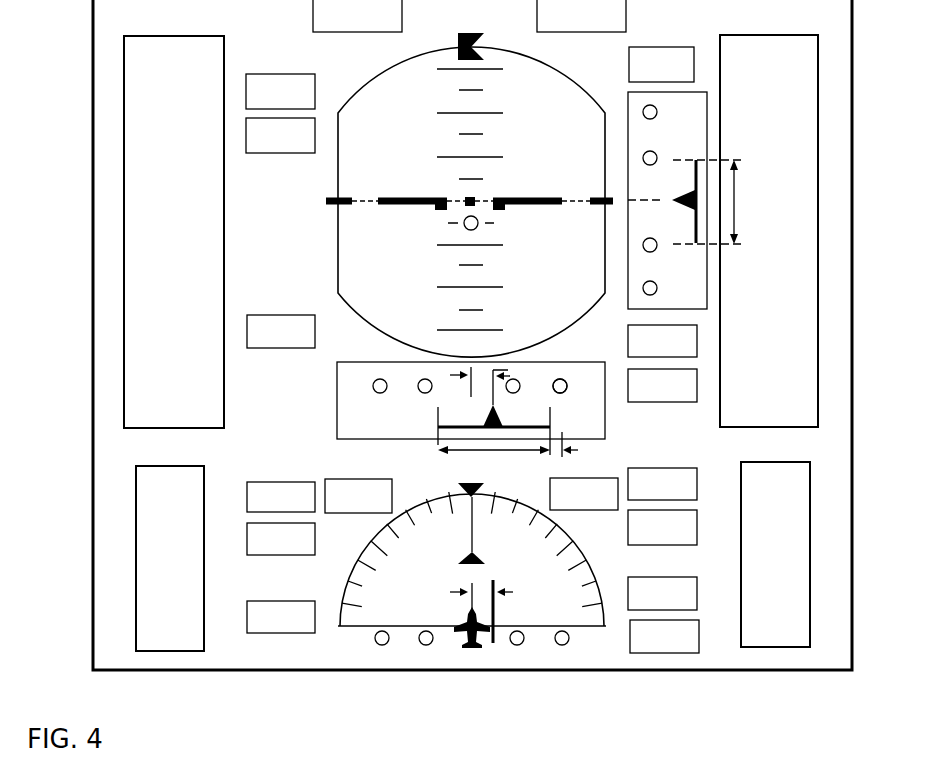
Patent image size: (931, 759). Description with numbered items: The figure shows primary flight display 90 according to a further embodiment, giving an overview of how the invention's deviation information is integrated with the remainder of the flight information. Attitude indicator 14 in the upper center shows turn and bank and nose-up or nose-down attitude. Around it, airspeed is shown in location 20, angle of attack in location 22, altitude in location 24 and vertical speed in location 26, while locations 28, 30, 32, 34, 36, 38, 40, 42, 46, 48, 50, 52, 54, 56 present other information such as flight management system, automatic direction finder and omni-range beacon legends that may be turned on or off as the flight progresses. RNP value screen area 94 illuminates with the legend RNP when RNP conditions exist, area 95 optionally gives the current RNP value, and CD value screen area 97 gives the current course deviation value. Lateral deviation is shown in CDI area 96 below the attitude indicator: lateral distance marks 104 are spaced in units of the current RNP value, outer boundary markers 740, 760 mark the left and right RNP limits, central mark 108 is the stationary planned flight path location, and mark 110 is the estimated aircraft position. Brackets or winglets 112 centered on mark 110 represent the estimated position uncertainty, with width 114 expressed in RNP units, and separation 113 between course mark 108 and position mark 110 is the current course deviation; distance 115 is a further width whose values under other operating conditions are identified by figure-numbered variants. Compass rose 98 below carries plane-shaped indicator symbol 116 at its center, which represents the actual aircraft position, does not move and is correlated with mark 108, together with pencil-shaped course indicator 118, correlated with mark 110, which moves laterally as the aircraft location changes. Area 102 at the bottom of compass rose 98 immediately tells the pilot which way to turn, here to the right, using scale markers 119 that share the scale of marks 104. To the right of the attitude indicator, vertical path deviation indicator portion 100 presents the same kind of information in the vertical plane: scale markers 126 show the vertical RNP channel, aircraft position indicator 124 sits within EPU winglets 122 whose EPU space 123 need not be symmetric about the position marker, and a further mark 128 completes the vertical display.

The attitude indicator 14 is at (402, 60).
The airspeed location 20 is at (201, 152).
The angle of attack location 22 is at (188, 567).
The altitude location 24 is at (793, 414).
The vertical speed location 26 is at (797, 587).
The information location 28 is at (378, 26).
The information location 30 is at (297, 106).
The information location 32 is at (297, 150).
The information location 34 is at (298, 346).
The information location 36 is at (298, 510).
The information location 38 is at (298, 552).
The information location 40 is at (298, 630).
The information location 42 is at (600, 26).
The information location 46 is at (679, 354).
The information location 48 is at (679, 399).
The information location 50 is at (679, 497).
The information location 52 is at (679, 541).
The information location 54 is at (679, 607).
The information location 56 is at (681, 650).
The primary flight display 90 is at (696, 694).
The RNP value screen area 94 is at (660, 47).
The RNP value screen area 95 is at (550, 490).
The CDI area 96 is at (337, 393).
The CD value screen area 97 is at (392, 494).
The compass rose 98 is at (348, 572).
The vertical path deviation indicator portion 100 is at (686, 291).
The area below compass rose 102 is at (401, 656).
The lateral distance marks 104 is at (572, 386).
The central mark 108 is at (450, 376).
The estimated aircraft position mark 110 is at (482, 408).
The brackets or winglets 112 is at (551, 420).
The separation 113 is at (481, 371).
The width 114 is at (470, 450).
The distance 115 is at (575, 450).
The plane-shaped indicator symbol 116 is at (463, 620).
The pencil-shaped course indicator 118 is at (498, 617).
The scale markers 119 is at (556, 653).
The EPU winglets 122 is at (674, 246).
The EPU space 123 is at (736, 207).
The aircraft position indicator 124 is at (683, 192).
The scale markers 126 is at (670, 97).
The desired vertical path line 128 is at (648, 200).
The outer boundary marker 740 is at (372, 383).
The outer boundary marker 760 is at (563, 378).